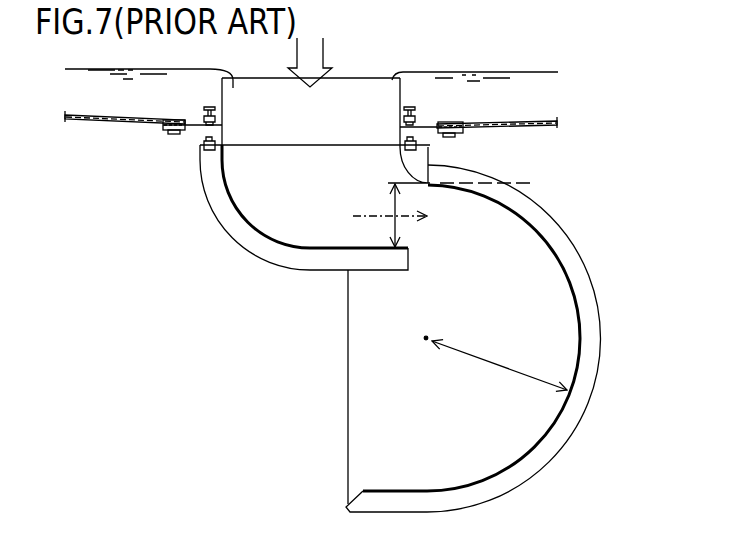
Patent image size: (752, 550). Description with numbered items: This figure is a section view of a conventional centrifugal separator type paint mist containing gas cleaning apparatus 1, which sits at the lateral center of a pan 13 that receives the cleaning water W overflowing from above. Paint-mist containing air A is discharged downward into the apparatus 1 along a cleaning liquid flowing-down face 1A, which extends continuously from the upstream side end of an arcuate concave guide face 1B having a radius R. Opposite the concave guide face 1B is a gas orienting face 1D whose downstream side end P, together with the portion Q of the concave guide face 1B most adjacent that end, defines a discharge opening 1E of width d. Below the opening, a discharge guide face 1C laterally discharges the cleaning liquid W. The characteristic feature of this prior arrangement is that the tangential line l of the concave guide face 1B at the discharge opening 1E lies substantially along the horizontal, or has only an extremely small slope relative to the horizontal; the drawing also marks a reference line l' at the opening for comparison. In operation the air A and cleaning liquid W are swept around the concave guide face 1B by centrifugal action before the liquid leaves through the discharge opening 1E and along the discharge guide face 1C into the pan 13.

The centrifugal separator type paint mist containing gas cleaning apparatus 1 is at (435, 295).
The cleaning liquid flowing-down face 1A is at (397, 133).
The concave guide face 1B is at (577, 332).
The discharge guide face 1C is at (387, 488).
The gas orienting face 1D is at (313, 246).
The discharge opening 1E is at (415, 228).
The pan 13 is at (528, 128).
The paint-mist containing air A is at (323, 50).
The cleaning liquid W is at (497, 70).
The downstream side end of the gas orienting face P is at (415, 252).
The portion of the concave guide face most adjacent the downstream side end Q is at (430, 187).
The radius of the arcuate concave guide face R is at (495, 368).
The width of the discharge opening d is at (395, 228).
The tangential line of the concave guide face l is at (505, 156).
The reference line l' is at (387, 190).